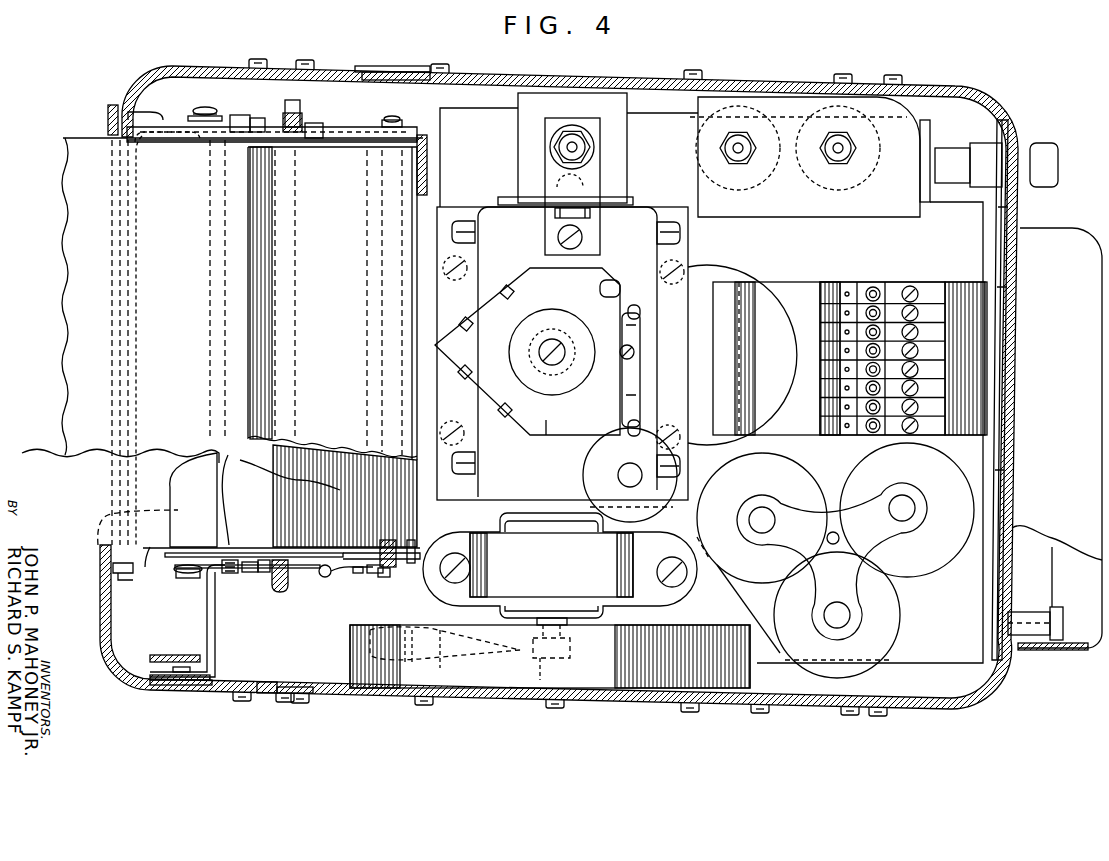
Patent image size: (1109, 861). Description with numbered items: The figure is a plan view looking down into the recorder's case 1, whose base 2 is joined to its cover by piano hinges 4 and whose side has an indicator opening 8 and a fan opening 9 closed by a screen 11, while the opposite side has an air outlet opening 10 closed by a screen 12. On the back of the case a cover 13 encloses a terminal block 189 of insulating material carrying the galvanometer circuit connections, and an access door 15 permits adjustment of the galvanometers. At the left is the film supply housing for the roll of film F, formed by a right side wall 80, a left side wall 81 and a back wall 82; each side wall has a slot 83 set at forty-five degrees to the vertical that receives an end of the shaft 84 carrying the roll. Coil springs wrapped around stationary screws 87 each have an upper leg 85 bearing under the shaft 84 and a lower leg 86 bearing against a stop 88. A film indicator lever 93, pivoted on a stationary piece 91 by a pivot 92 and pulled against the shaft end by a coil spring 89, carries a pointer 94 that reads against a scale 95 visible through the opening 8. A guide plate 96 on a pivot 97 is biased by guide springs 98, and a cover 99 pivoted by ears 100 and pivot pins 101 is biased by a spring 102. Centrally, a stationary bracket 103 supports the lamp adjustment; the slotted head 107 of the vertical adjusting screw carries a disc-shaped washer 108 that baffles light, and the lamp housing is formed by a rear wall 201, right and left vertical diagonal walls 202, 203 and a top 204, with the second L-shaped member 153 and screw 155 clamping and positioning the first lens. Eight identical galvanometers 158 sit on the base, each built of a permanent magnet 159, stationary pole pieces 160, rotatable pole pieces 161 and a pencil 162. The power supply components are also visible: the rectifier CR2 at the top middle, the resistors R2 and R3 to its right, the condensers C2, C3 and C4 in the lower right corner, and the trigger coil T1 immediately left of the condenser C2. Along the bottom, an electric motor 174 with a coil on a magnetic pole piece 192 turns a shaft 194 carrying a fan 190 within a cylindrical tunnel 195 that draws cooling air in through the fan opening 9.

The case 1 is at (120, 62).
The base 2 is at (190, 67).
The piano hinges 4 is at (999, 261).
The indicator opening 8 is at (178, 692).
The fan opening 9 is at (300, 703).
The air outlet opening 10 is at (318, 67).
The screen 11 is at (312, 694).
The screen 12 is at (337, 71).
The cover 13 is at (1052, 235).
The access door 15 is at (1012, 362).
The right side wall 80 is at (170, 559).
The left side wall 81 is at (184, 132).
The back wall 82 is at (441, 500).
The slot 83 is at (245, 117).
The shaft 84 is at (299, 105).
The upper leg 85 is at (268, 120).
The lower leg 86 is at (320, 124).
The stationary screw 87 is at (207, 107).
The stop 88 is at (303, 118).
The coil spring 89 is at (329, 578).
The stationary piece 91 is at (355, 574).
The pivot 92 is at (372, 574).
The lever 93 is at (301, 583).
The pointer 94 is at (151, 670).
The scale 95 is at (170, 655).
The guide plate 96 is at (150, 487).
The pivot 97 is at (132, 115).
The guide springs 98 is at (166, 142).
The cover 99 is at (266, 325).
The ears 100 is at (422, 135).
The pivot pins 101 is at (392, 117).
The spring 102 is at (430, 161).
The stationary bracket 103 is at (497, 200).
The slotted head 107 is at (549, 338).
The disc-shaped washer 108 is at (518, 345).
The second L-shaped member 153 is at (642, 332).
The screw 155 is at (636, 352).
The galvanometers 158 is at (898, 276).
The permanent magnet 159 is at (697, 286).
The stationary pole pieces 160 is at (850, 340).
The rotatable pole pieces 161 is at (824, 313).
The pencil 162 is at (844, 388).
The electric motor 174 is at (607, 624).
The terminal block 189 is at (1056, 600).
The fan 190 is at (446, 690).
The magnetic pole piece 192 is at (540, 543).
The shaft 194 is at (545, 682).
The cylindrical tunnel 195 is at (718, 660).
The rear wall 201 is at (626, 292).
The right vertical diagonal wall 202 is at (505, 417).
The left vertical diagonal wall 203 is at (502, 289).
The top 204 is at (546, 422).
The rectifier CR2 is at (615, 141).
The trigger coil T1 is at (584, 479).
The resistor R2 is at (754, 187).
The resistor R3 is at (860, 187).
The condenser C2 is at (736, 468).
The condenser C3 is at (888, 615).
The condenser C4 is at (875, 468).
The film F is at (62, 296).